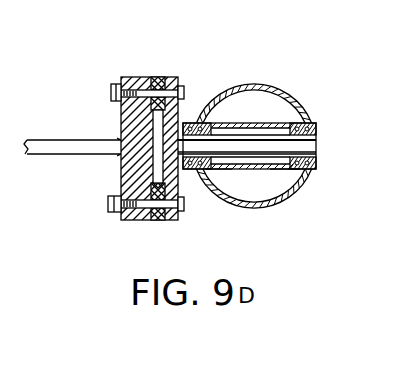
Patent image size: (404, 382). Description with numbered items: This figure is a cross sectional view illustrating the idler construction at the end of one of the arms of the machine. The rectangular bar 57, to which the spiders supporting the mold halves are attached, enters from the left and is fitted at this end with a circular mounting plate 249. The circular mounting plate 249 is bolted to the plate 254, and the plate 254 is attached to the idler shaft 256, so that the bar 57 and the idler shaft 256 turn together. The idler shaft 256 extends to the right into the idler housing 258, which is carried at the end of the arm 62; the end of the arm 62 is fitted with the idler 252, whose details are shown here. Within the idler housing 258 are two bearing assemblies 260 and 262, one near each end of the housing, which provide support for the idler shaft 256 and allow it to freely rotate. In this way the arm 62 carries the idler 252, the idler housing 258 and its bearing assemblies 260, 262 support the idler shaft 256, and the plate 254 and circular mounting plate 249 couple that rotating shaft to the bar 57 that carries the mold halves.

The bar 57 is at (46, 142).
The circular mounting plate 249 is at (141, 46).
The plate 254 is at (168, 77).
The idler housing 258 is at (252, 123).
The arm 62 is at (291, 98).
The bearing assembly 262 is at (315, 129).
The idler shaft 256 is at (306, 143).
The idler 252 is at (285, 170).
The bearing assembly 260 is at (218, 170).